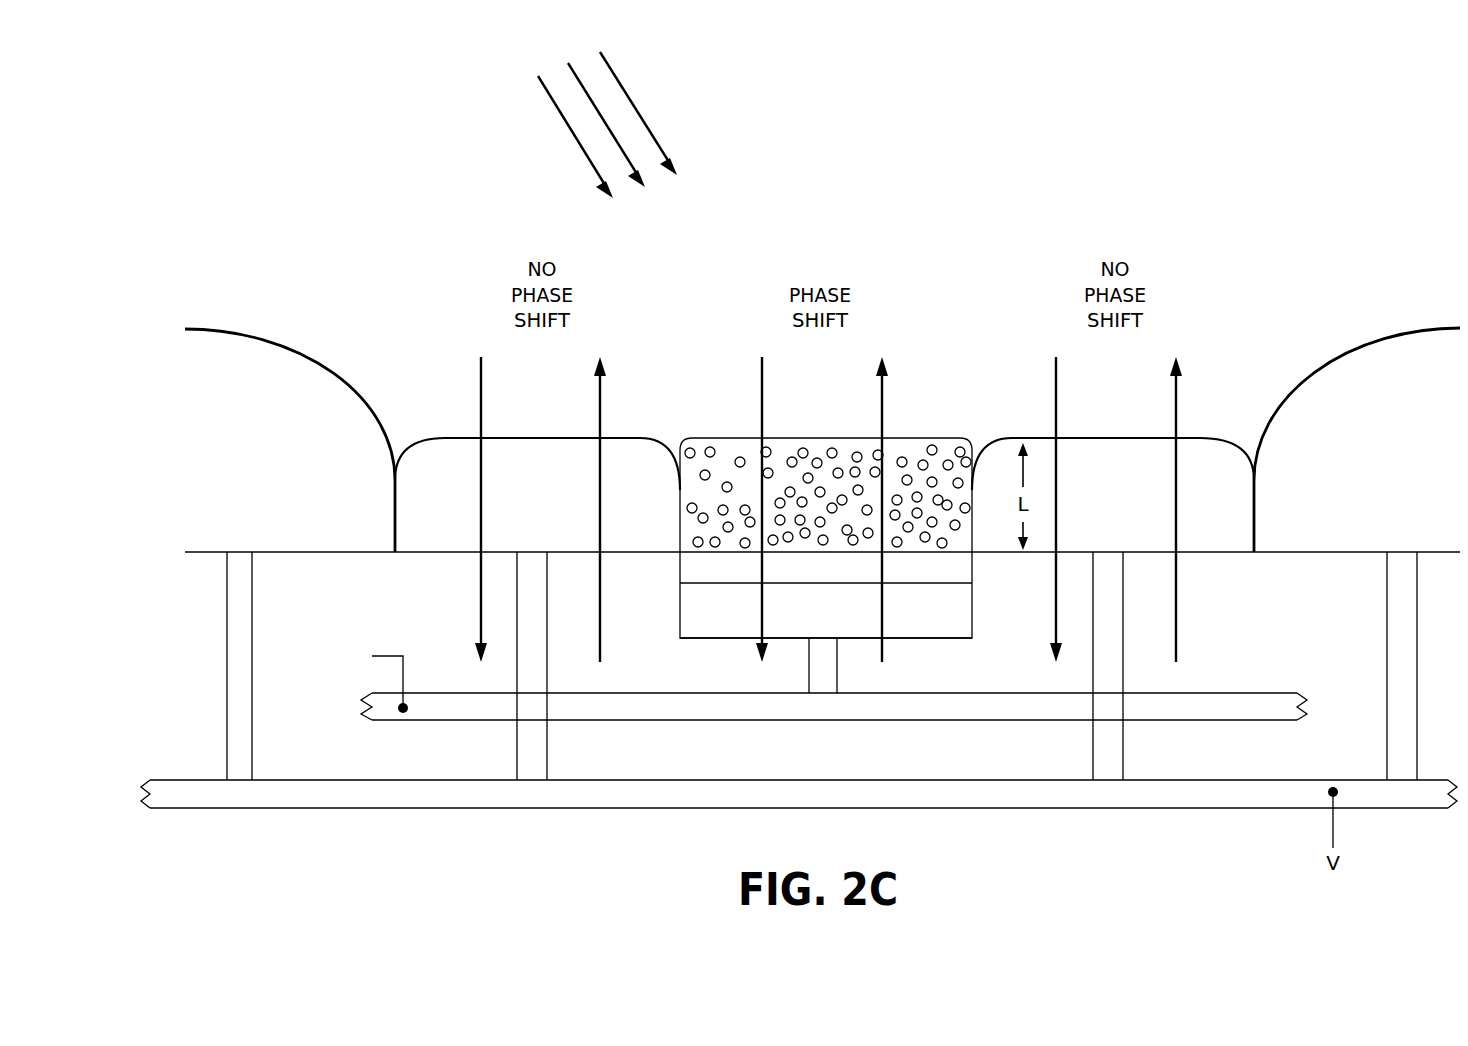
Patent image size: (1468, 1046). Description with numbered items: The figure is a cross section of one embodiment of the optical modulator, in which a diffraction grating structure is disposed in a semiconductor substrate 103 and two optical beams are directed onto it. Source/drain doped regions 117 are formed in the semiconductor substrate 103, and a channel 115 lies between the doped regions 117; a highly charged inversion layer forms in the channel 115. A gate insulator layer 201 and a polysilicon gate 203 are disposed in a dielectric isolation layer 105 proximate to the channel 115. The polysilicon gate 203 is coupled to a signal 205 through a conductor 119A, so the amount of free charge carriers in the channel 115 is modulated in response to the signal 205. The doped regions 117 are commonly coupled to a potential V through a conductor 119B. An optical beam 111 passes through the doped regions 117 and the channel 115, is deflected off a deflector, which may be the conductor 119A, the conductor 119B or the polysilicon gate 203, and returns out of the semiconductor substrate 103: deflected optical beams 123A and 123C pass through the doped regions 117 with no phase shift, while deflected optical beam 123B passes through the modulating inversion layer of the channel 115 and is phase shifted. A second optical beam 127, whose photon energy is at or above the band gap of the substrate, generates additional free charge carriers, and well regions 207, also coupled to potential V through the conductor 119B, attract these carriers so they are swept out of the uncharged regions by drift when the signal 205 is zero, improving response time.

The semiconductor substrate 103 is at (1283, 260).
The dielectric isolation layer 105 is at (408, 602).
The optical beam 111 is at (481, 398).
The channel 115 is at (905, 450).
The doped regions 117 is at (458, 443).
The conductor 119A is at (1233, 693).
The conductor 119B is at (1237, 780).
The deflected optical beam 123A is at (600, 397).
The deflected optical beam 123B is at (882, 383).
The deflected optical beam 123C is at (1176, 397).
The second optical beam 127 is at (650, 110).
The gate insulator layer 201 is at (680, 568).
The polysilicon gate 203 is at (680, 617).
The signal 205 is at (310, 673).
The well regions 207 is at (273, 350).